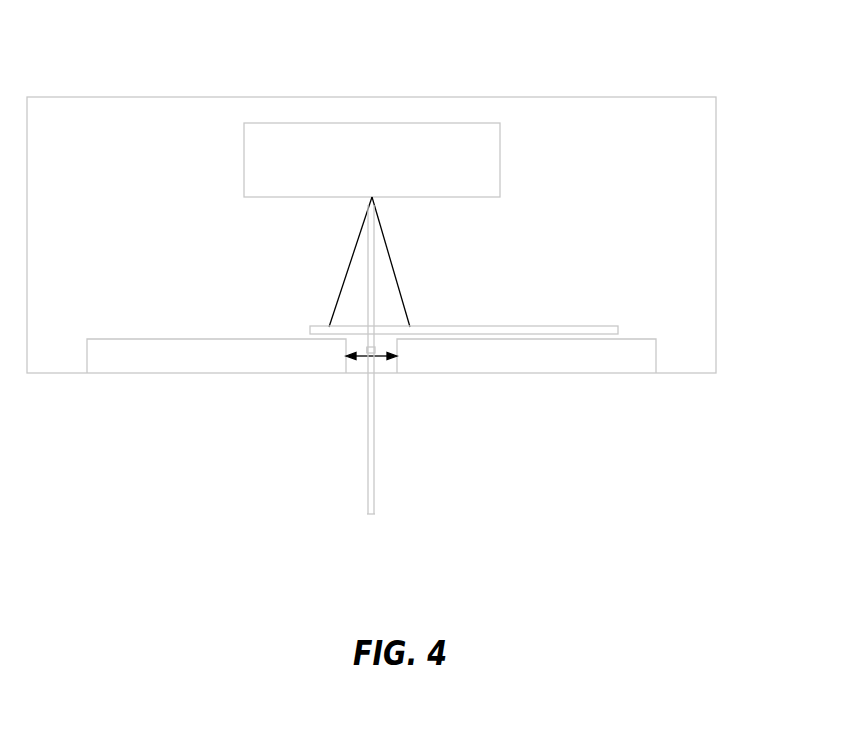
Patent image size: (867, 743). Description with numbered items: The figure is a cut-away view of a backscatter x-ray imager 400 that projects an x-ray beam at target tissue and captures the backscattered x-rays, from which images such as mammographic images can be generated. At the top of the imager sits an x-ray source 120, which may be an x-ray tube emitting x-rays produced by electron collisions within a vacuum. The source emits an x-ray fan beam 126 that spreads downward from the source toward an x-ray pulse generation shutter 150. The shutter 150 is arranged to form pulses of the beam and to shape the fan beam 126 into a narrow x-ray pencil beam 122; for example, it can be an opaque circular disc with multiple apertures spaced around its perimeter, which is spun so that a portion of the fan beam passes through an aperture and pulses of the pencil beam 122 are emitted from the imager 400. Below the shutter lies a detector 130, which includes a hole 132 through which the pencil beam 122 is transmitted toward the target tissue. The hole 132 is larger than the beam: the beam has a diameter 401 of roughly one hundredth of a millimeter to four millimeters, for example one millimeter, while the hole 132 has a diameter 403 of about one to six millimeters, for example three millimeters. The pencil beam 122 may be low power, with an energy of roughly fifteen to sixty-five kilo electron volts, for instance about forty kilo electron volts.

The backscatter x-ray imager 400 is at (380, 73).
The x-ray source 120 is at (372, 160).
The x-ray fan beam 126 is at (346, 280).
The x-ray pulse generation shutter 150 is at (508, 319).
The detector 130 is at (272, 366).
The hole 132 is at (344, 372).
The diameter of x-ray beam 401 is at (367, 350).
The diameter of hole 403 is at (377, 352).
The x-ray pencil beam 122 is at (358, 482).